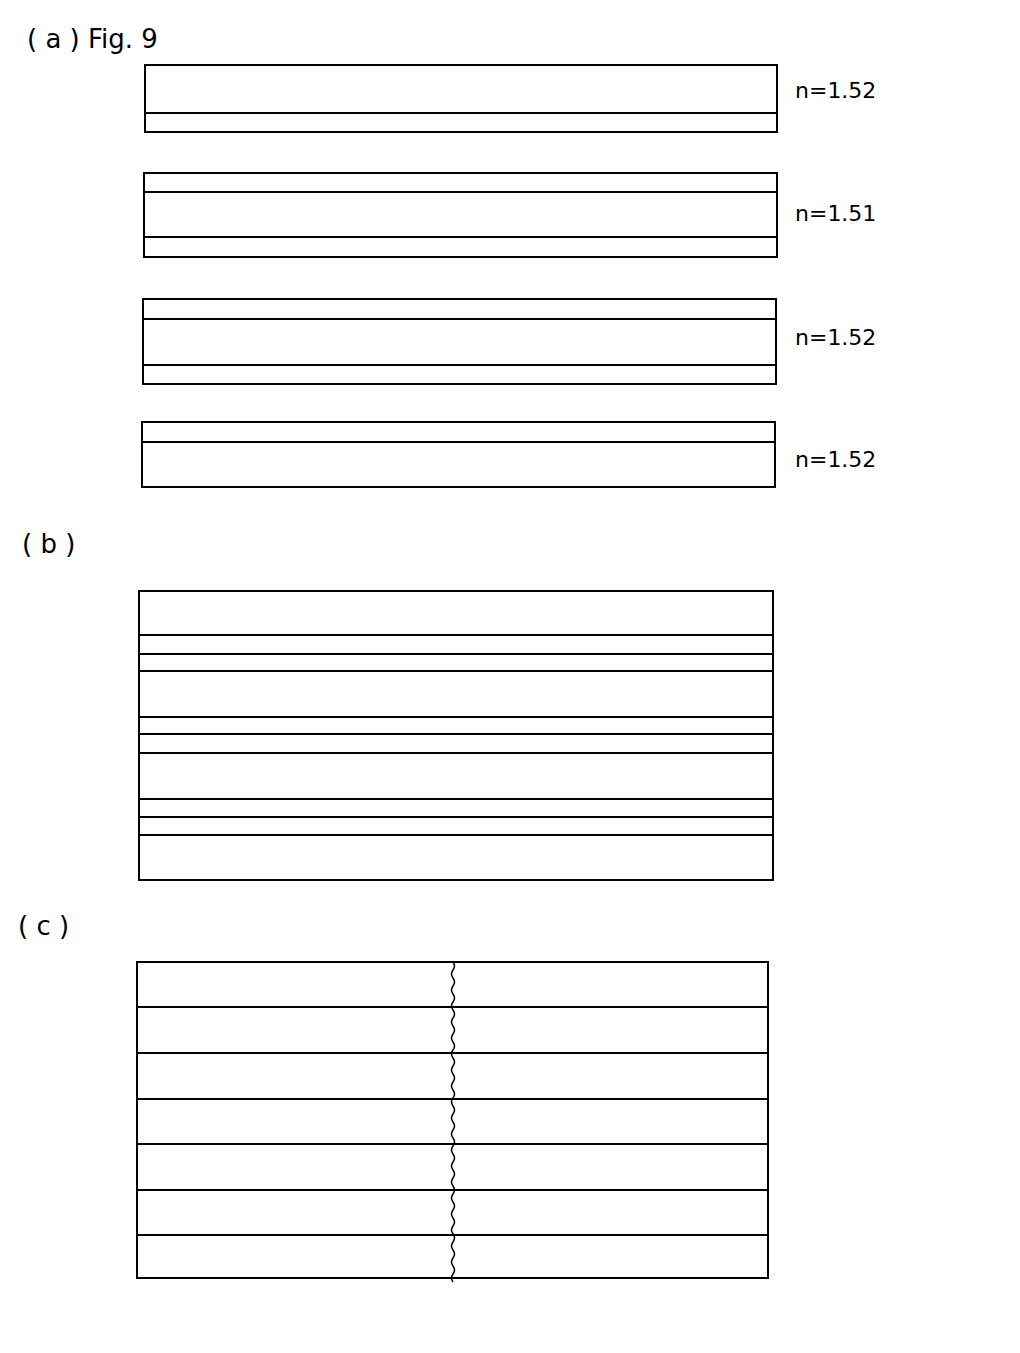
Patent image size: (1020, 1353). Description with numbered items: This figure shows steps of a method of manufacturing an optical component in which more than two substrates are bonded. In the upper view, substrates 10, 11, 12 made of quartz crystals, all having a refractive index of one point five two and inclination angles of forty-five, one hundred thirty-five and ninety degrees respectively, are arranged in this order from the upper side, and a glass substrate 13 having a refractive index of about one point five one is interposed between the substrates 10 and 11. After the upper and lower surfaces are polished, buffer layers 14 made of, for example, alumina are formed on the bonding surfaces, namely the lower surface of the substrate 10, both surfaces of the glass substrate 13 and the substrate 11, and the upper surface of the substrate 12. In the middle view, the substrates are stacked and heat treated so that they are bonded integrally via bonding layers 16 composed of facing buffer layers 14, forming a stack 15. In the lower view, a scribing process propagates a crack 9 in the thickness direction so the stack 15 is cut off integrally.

The crack 9 is at (455, 962).
The substrate 10 is at (145, 92).
The substrate 11 is at (143, 340).
The substrate 12 is at (142, 463).
The glass substrate 13 is at (144, 217).
The buffer layer 14 is at (145, 122).
The stack 15 is at (803, 856).
The bonding layer 16 is at (781, 632).